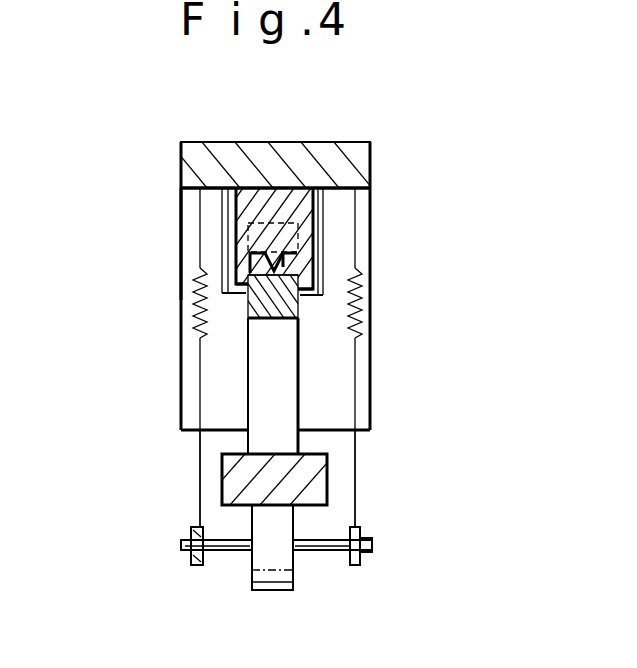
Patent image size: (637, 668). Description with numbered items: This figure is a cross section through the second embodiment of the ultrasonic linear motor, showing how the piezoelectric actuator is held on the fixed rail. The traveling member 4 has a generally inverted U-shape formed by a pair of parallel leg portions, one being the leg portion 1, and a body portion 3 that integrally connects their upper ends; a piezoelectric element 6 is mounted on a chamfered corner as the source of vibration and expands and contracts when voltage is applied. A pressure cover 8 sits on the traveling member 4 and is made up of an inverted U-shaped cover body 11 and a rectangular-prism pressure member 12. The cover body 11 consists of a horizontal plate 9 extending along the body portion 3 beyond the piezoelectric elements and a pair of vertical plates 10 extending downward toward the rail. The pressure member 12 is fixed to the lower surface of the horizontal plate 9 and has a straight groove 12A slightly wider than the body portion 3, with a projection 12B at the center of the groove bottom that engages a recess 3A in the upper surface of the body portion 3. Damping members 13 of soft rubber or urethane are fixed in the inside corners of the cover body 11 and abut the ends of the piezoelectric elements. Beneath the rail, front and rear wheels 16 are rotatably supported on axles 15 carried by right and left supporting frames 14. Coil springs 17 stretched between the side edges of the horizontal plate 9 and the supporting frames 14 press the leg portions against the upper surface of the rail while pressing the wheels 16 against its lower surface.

The leg portion 1 is at (280, 412).
The body portion 3 is at (325, 296).
The recess 3A is at (236, 294).
The traveling member 4 is at (301, 385).
The piezoelectric element 6 is at (300, 242).
The pressure cover 8 is at (383, 156).
The horizontal plate 9 is at (335, 160).
The vertical plate 10 is at (184, 238).
The cover body 11 is at (178, 208).
The pressure member 12 is at (305, 212).
The straight groove 12A is at (284, 320).
The projection 12B is at (235, 262).
The damping member 13 is at (323, 266).
The supporting frame 14 is at (190, 563).
The axle 15 is at (322, 549).
The wheel 16 is at (258, 573).
The coil spring 17 is at (197, 462).